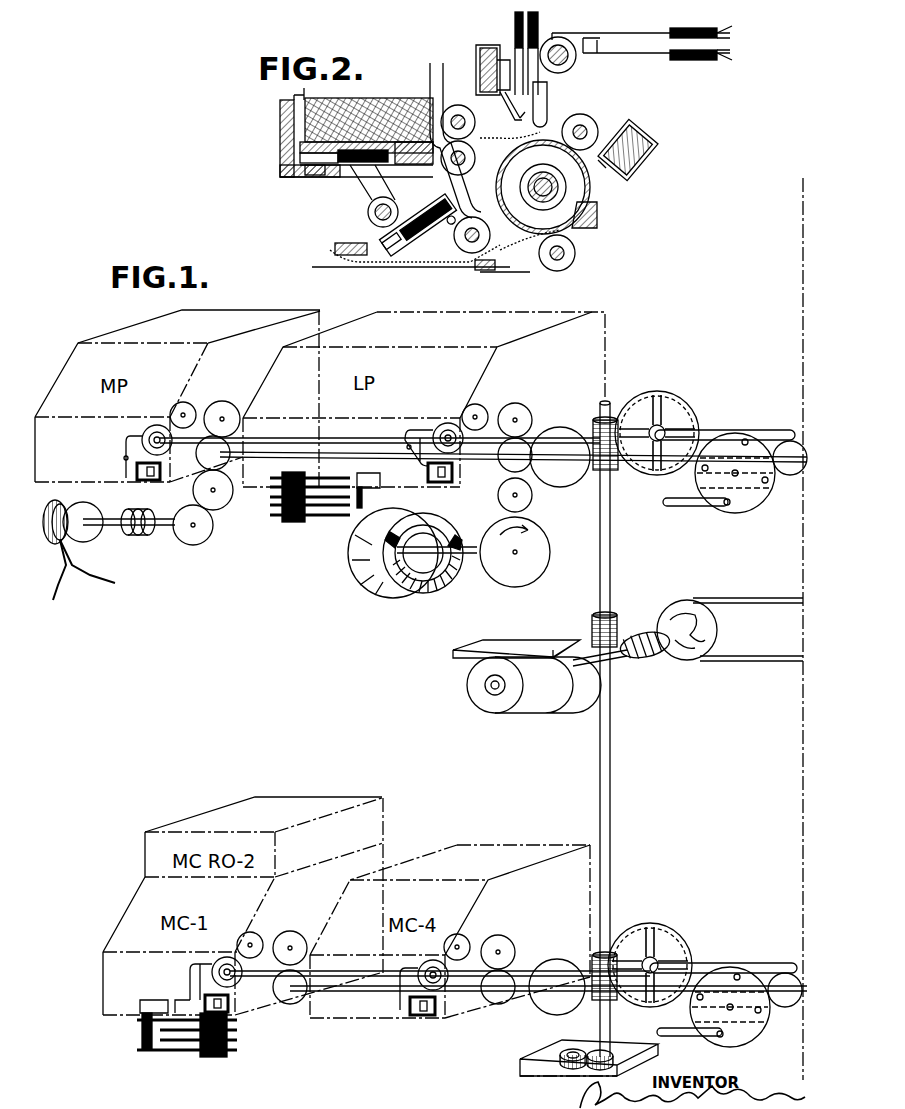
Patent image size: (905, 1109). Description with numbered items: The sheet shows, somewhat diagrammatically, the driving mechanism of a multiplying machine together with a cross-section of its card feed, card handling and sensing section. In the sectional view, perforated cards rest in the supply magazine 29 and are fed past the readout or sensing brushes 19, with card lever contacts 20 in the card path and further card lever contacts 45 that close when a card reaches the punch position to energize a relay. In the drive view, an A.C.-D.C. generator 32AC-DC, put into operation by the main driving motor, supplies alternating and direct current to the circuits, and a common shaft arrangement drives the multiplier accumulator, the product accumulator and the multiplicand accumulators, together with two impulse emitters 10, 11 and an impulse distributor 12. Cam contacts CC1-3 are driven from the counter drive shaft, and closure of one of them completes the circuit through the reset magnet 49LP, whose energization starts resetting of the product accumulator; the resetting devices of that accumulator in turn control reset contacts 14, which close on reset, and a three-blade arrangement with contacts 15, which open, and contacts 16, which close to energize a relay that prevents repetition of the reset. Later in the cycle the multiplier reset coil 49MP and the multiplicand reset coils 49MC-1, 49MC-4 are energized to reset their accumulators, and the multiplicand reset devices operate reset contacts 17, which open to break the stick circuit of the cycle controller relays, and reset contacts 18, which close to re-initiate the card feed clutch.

In FIG. 2, the supply magazine 29 is at (360, 102).
In FIG. 2, the card lever contacts 20 is at (547, 95).
In FIG. 2, the readout or sensing brushes 19 is at (600, 168).
In FIG. 2, the card lever contacts 45 is at (380, 243).
In FIG. 1, the impulse distributor 12 is at (48, 505).
In FIG. 1, the MP reset coil 49MP is at (148, 481).
In FIG. 1, the cam contacts CC1-3 is at (150, 540).
In FIG. 1, the reset contacts 15 is at (333, 483).
In FIG. 1, the reset contacts 16 is at (327, 493).
In FIG. 1, the reset contacts 14 is at (348, 512).
In FIG. 1, the LP reset magnet 49LP is at (440, 483).
In FIG. 1, the impulse emitter 11 is at (370, 590).
In FIG. 1, the impulse emitter 10 is at (432, 598).
In FIG. 1, the A.C.-D.C. generator 32AC-DC is at (549, 715).
In FIG. 1, the reset contacts 18 is at (175, 1000).
In FIG. 1, the reset contacts 17 is at (185, 1052).
In FIG. 1, the MC-1 reset coil 49MC-1 is at (238, 1012).
In FIG. 1, the MC-4 reset coil 49MC-4 is at (422, 1016).